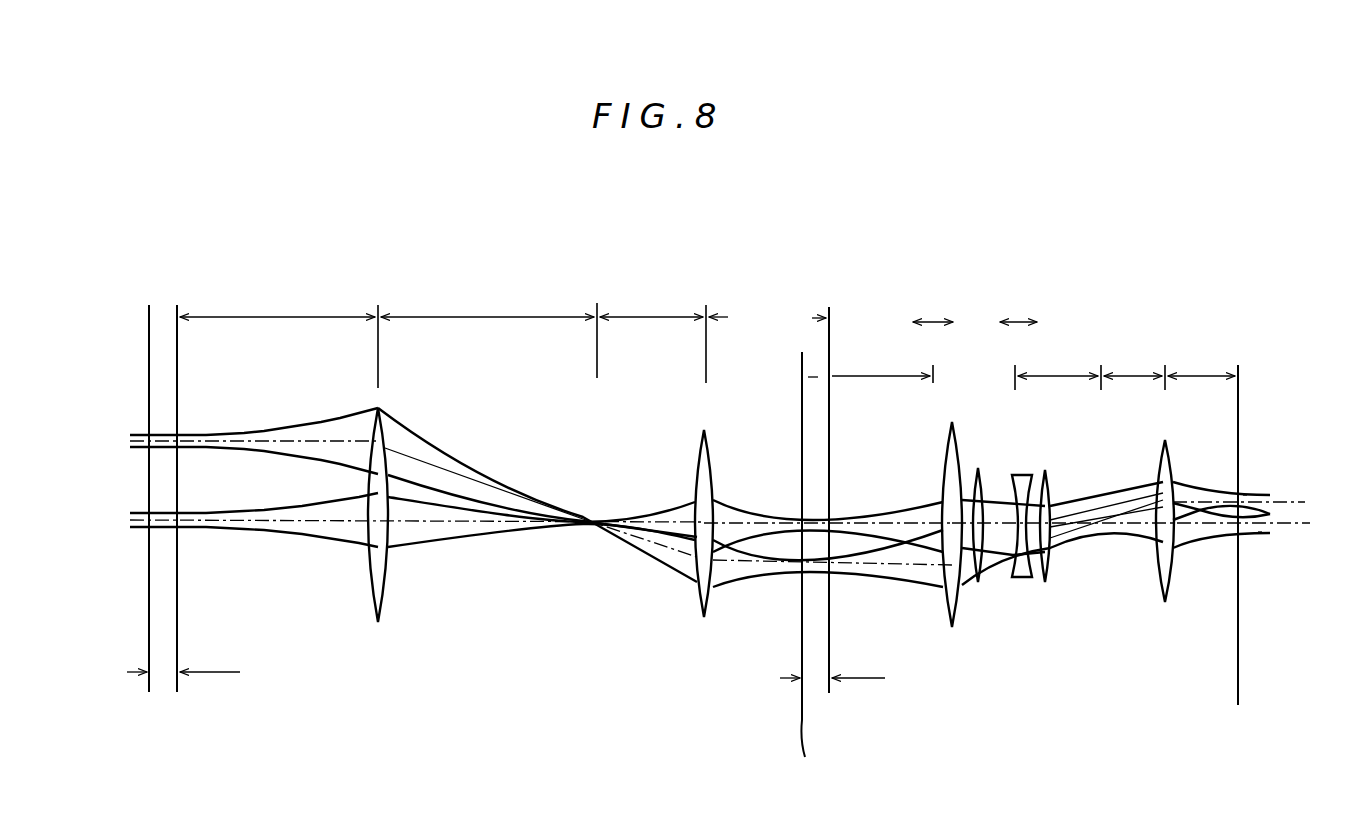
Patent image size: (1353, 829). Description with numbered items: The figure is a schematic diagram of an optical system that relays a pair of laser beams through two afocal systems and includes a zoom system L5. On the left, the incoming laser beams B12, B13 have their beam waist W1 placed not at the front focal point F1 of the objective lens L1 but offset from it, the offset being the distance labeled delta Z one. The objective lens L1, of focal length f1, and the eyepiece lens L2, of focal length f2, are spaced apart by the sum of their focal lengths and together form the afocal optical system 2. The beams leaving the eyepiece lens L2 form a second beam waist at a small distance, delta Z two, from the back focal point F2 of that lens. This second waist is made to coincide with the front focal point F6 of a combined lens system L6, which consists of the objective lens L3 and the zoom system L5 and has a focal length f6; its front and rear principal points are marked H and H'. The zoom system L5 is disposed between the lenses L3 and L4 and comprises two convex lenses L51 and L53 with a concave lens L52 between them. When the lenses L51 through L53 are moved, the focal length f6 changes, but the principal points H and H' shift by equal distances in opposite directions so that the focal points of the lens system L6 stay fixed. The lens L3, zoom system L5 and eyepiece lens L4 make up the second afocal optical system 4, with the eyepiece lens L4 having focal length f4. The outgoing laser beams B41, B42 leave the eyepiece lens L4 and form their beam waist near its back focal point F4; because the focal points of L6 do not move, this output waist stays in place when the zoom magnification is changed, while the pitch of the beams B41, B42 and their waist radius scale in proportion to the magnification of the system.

The laser beam B12 is at (191, 443).
The laser beam B13 is at (230, 521).
The objective lens L1 is at (385, 607).
The eyepiece lens L2 is at (695, 602).
The objective lens L3 is at (944, 605).
The eyepiece lens L4 is at (1158, 577).
The zoom system L5 is at (1035, 532).
The convex lens L51 is at (979, 465).
The concave lens L52 is at (1022, 473).
The convex lens L53 is at (1047, 478).
The combined lens system L6 is at (1060, 655).
The afocal optical system 2 is at (733, 690).
The afocal optical system 4 is at (1205, 693).
The beam waist W1 is at (129, 516).
The front focal point F1 is at (188, 517).
The back focal point F2 is at (841, 521).
The front focal point F6 is at (778, 575).
The back focal point F4 is at (1243, 564).
The laser beam B42 is at (1245, 496).
The laser beam B41 is at (1260, 530).
The focal length f1 is at (388, 336).
The focal length f2 is at (713, 333).
The focal length f6 is at (954, 368).
The focal length f4 is at (1169, 368).
The front principal point H is at (933, 341).
The rear principal point H' is at (1018, 341).